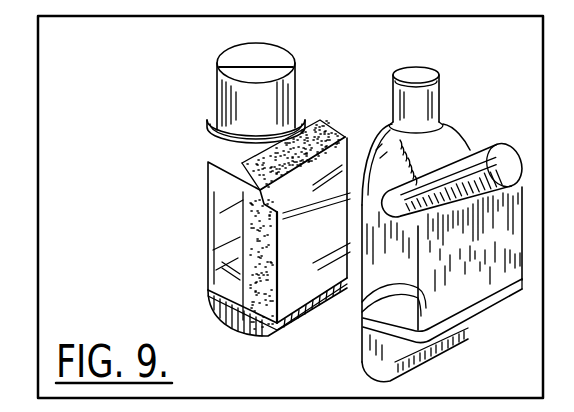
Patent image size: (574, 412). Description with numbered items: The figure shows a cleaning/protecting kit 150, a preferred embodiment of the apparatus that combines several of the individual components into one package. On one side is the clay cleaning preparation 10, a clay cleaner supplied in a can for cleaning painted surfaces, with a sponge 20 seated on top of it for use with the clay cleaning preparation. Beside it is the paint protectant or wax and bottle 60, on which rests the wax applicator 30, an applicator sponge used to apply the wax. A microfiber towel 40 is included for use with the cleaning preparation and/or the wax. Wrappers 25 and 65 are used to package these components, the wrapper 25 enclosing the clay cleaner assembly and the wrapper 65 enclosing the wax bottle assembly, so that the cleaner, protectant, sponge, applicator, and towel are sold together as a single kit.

The kit 150 is at (157, 60).
The clay cleaning preparation 10 is at (210, 291).
The sponge 20 is at (320, 124).
The wrapper 25 is at (220, 190).
The wax applicator 30 is at (490, 143).
The microfiber towel 40 is at (477, 317).
The wax and bottle 60 is at (455, 125).
The wrapper 65 is at (381, 303).